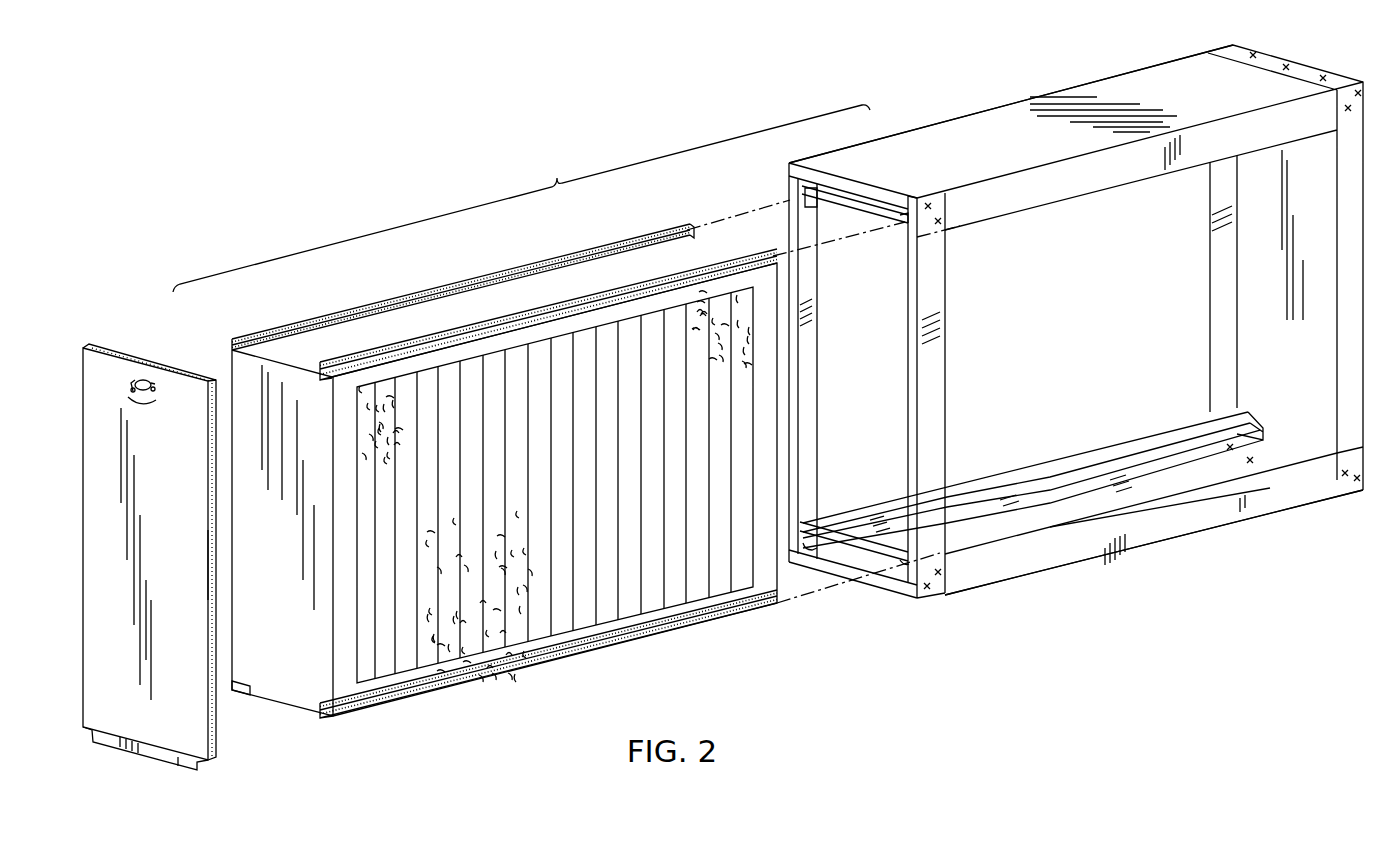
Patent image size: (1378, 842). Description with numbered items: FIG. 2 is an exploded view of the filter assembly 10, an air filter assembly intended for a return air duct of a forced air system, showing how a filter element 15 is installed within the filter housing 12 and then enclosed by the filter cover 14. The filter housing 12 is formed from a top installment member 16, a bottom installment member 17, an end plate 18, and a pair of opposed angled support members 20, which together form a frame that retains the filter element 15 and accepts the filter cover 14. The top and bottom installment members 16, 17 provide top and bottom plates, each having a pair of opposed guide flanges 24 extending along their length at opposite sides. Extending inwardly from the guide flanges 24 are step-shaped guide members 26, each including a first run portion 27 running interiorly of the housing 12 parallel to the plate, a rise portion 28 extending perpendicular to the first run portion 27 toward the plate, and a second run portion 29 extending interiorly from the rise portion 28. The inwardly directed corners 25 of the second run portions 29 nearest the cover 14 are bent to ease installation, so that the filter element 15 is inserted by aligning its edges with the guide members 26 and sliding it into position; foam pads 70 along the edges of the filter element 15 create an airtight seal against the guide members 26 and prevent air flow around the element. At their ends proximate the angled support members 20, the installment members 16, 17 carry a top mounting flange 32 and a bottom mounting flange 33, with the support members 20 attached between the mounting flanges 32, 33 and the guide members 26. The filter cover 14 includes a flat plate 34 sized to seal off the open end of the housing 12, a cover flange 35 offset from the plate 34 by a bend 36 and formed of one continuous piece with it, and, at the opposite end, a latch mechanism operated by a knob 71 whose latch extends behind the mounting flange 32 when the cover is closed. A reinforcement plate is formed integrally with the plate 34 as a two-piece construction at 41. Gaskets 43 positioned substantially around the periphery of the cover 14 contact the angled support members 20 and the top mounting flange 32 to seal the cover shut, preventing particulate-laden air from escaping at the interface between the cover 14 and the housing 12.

The filter assembly 10 is at (521, 437).
The filter housing 12 is at (1076, 339).
The filter cover 14 is at (183, 557).
The filter element 15 is at (503, 679).
The top installment member 16 is at (985, 113).
The bottom installment member 17 is at (995, 582).
The end plate 18 is at (1298, 423).
The angled support members 20 is at (795, 335).
The guide flanges 24 is at (1075, 182).
The inwardly directed corners 25 is at (895, 218).
The guide members 26 is at (972, 229).
The first run portion 27 is at (1000, 222).
The rise portion 28 is at (840, 194).
The second run portion 29 is at (987, 498).
The top mounting flange 32 is at (833, 178).
The bottom mounting flange 33 is at (897, 590).
The flat plate 34 is at (123, 710).
The cover flange 35 is at (160, 755).
The bend 36 is at (178, 758).
The integral two-piece construction 41 is at (210, 558).
The gaskets 43 is at (170, 368).
The foam pads 70 is at (570, 298).
The knob 71 is at (143, 380).